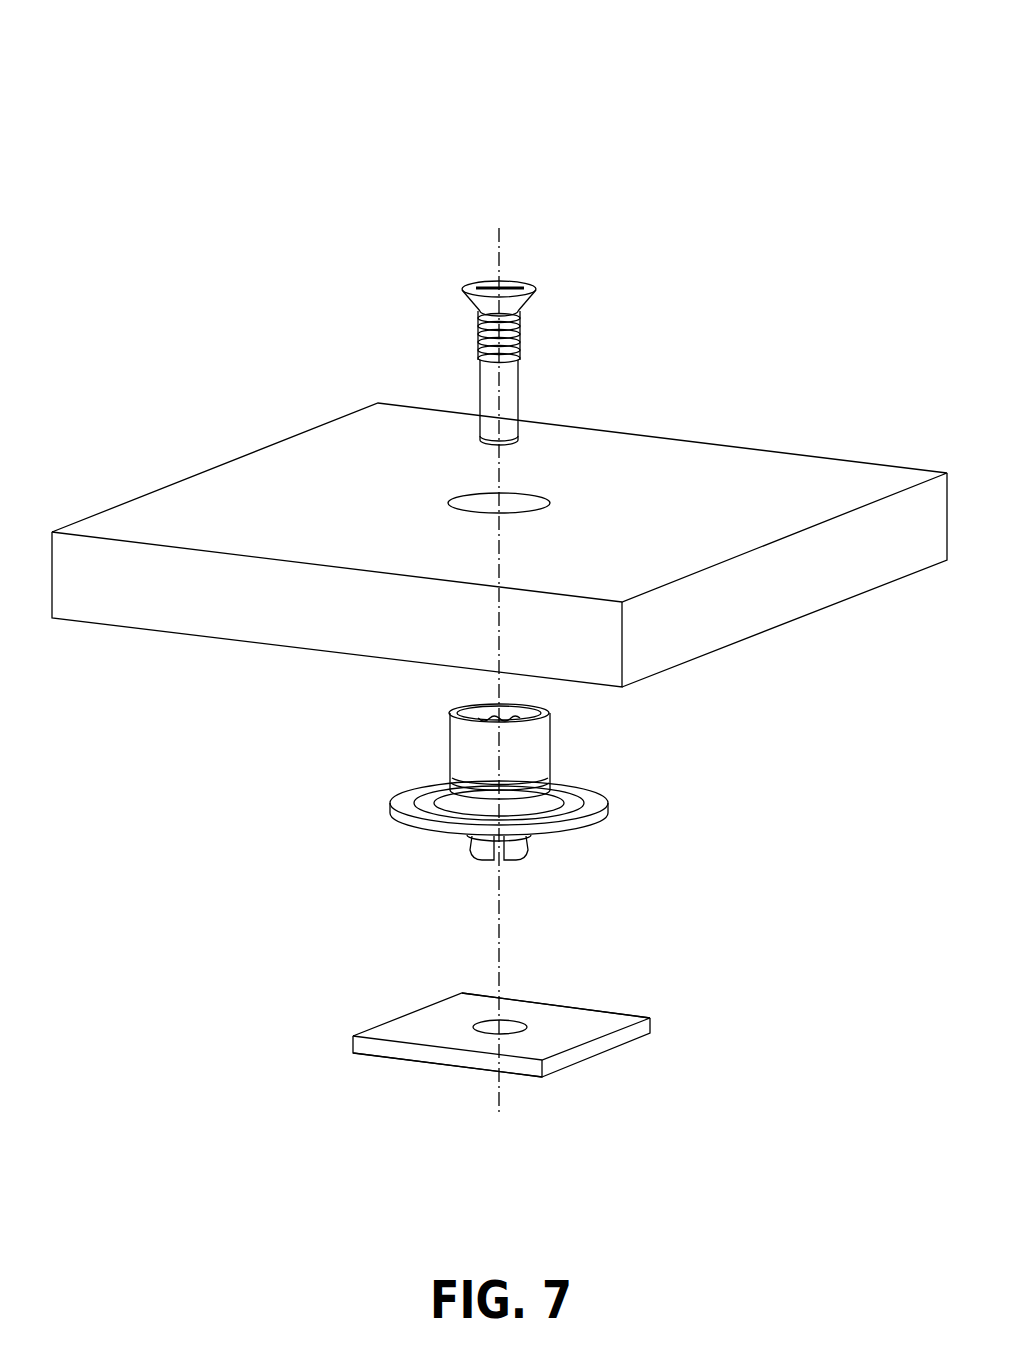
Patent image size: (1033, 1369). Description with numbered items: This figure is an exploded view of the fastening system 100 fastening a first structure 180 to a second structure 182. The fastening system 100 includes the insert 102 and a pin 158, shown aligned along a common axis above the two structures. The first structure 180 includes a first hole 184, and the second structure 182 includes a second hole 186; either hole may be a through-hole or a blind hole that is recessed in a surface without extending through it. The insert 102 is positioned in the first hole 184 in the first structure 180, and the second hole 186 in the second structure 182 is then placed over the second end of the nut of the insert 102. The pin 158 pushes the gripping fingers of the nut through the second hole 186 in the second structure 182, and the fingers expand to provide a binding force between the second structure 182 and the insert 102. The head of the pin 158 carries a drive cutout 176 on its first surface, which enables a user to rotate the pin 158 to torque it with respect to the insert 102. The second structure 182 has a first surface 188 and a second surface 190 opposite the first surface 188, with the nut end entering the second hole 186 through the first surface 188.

The fastening system 100 is at (74, 52).
The insert 102 is at (392, 753).
The pin 158 is at (446, 268).
The drive cutout 176 is at (505, 285).
The first structure 180 is at (245, 485).
The second structure 182 is at (398, 1025).
The first hole 184 is at (476, 500).
The second hole 186 is at (485, 1020).
The first surface 188 is at (566, 1022).
The second surface 190 is at (448, 1074).